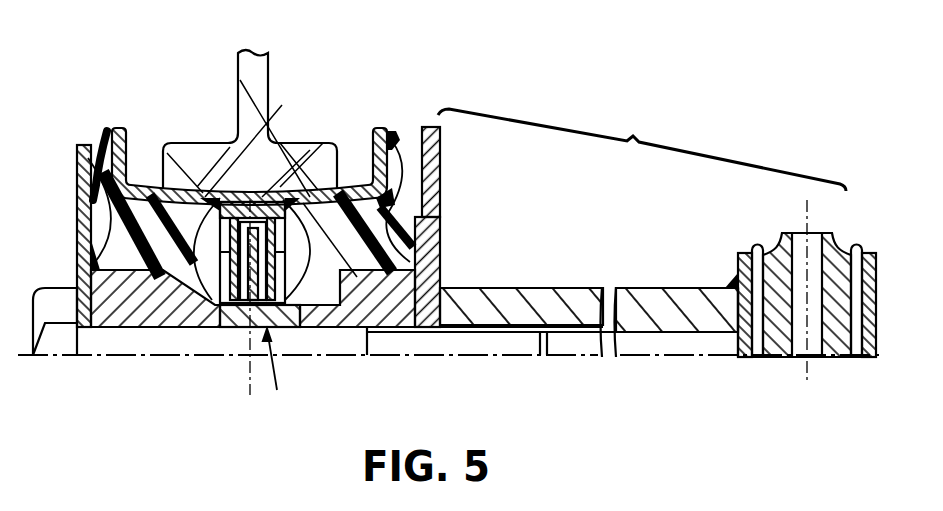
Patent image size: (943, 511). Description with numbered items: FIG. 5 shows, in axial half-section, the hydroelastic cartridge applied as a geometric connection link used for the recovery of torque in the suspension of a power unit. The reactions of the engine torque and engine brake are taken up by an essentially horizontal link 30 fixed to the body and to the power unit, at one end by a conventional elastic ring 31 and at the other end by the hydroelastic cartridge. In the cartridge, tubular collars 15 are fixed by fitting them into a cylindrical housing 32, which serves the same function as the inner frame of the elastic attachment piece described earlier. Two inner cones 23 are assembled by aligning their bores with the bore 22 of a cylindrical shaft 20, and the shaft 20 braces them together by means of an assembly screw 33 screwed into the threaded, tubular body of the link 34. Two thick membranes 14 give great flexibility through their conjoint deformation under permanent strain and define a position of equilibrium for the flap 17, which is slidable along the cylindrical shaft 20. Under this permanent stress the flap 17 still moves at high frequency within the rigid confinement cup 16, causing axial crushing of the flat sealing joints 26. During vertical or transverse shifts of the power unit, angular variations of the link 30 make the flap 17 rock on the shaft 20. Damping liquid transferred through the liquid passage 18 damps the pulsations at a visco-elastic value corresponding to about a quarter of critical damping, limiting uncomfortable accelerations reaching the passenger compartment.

The thick membranes 14 is at (100, 197).
The tubular collars 15 is at (157, 183).
The rigid confinement cup 16 is at (235, 160).
The flap 17 is at (245, 323).
The liquid passage 18 is at (255, 268).
The cylindrical shaft 20 is at (229, 307).
The bore 22 is at (282, 376).
The inner cones 23 is at (123, 300).
The flat sealing joints 26 is at (324, 152).
The link 30 is at (642, 147).
The elastic ring 31 is at (769, 333).
The cylindrical housing 32 is at (210, 177).
The assembly screw 33 is at (50, 345).
The link 34 is at (533, 302).